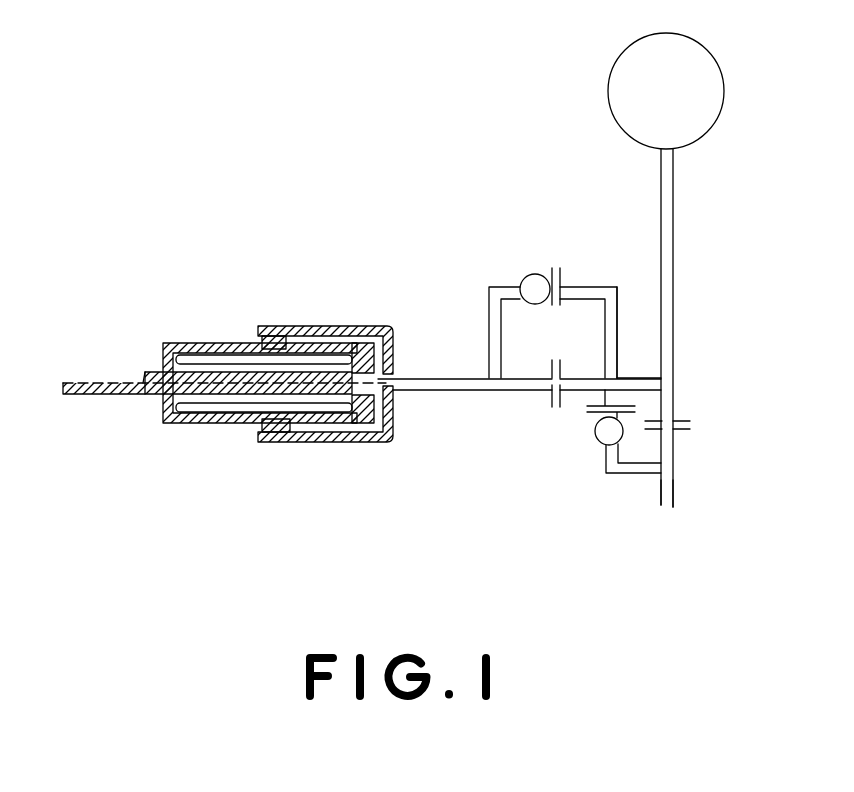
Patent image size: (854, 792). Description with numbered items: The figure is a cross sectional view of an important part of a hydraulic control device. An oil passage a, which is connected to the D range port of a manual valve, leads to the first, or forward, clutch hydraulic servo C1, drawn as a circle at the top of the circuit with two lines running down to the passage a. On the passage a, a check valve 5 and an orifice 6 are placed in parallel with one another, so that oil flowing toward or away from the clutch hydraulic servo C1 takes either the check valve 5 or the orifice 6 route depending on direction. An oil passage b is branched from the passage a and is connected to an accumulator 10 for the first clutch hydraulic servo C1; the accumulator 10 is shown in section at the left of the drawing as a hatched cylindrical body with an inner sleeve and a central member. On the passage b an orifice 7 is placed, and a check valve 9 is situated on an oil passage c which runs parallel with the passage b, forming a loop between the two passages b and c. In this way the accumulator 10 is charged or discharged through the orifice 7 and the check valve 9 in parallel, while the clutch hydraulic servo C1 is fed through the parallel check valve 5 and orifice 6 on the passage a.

The accumulator 10 is at (198, 344).
The check valve 9 is at (531, 278).
The orifice 7 is at (553, 394).
The check valve 5 is at (597, 439).
The orifice 6 is at (688, 432).
The oil passage c is at (615, 323).
The oil passage b is at (633, 375).
The oil passage a is at (673, 490).
The first clutch hydraulic servo C1 is at (666, 270).